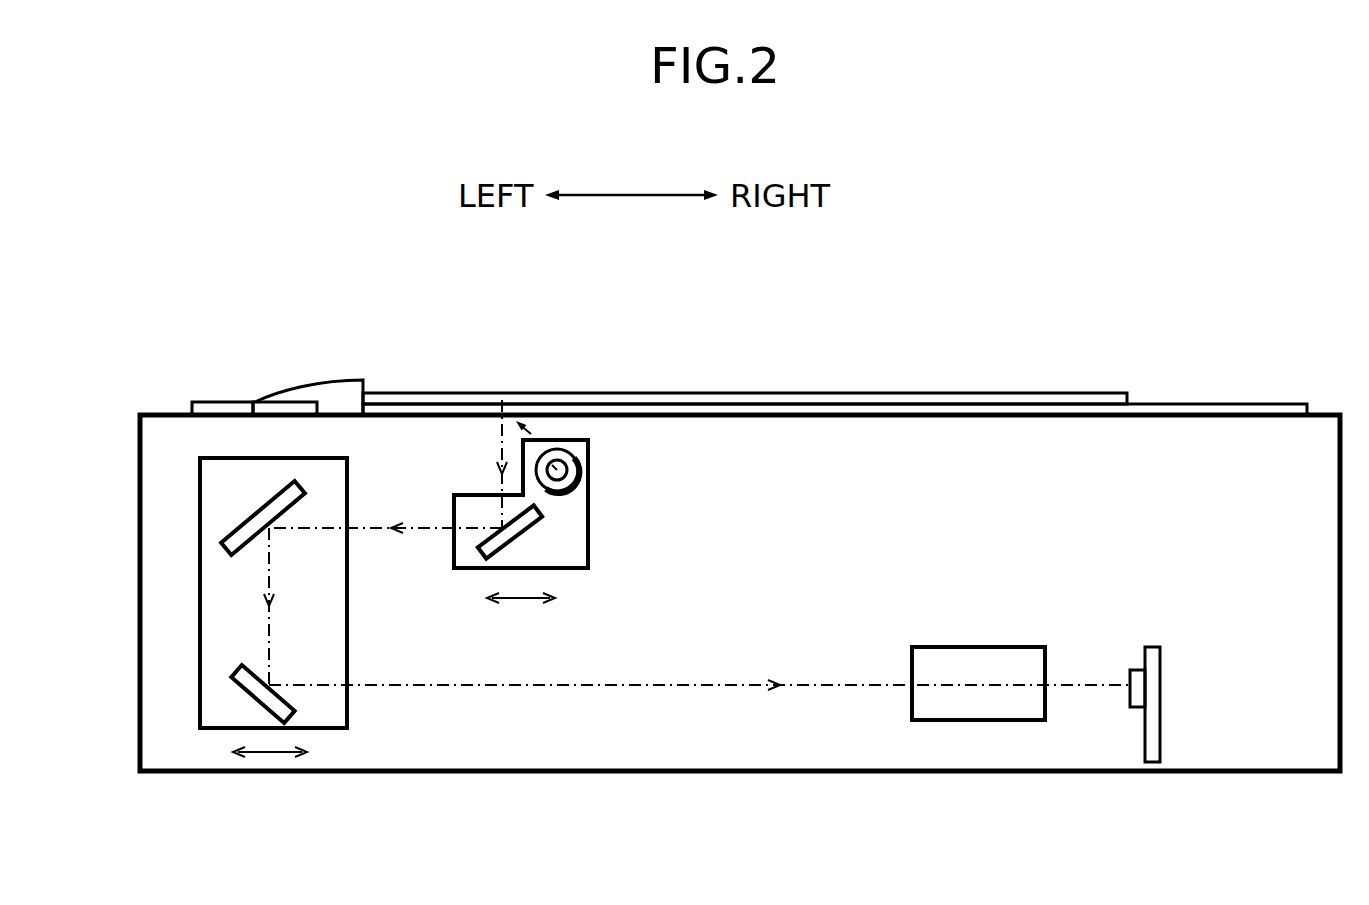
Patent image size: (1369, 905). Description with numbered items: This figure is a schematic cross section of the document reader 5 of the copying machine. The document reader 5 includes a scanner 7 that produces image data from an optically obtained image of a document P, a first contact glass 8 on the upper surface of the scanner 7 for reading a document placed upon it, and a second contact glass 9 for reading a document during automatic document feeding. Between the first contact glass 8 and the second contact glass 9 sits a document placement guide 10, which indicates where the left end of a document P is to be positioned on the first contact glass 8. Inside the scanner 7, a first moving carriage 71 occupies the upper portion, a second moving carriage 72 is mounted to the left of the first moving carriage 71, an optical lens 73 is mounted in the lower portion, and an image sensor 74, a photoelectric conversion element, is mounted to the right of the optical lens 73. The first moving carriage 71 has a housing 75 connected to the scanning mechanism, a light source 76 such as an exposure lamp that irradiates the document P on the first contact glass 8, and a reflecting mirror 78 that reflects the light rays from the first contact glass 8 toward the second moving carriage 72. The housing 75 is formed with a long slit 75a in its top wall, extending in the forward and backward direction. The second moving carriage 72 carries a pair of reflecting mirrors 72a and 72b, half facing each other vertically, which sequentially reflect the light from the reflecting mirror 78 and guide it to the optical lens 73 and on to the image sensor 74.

The document reader 5 is at (1068, 306).
The scanner 7 is at (643, 780).
The first contact glass 8 is at (1227, 403).
The second contact glass 9 is at (222, 400).
The document placement guide 10 is at (298, 394).
The first moving carriage 71 is at (602, 548).
The second moving carriage 72 is at (353, 714).
The reflecting mirror 72a is at (237, 534).
The reflecting mirror 72b is at (247, 693).
The optical lens 73 is at (973, 720).
The image sensor 74 is at (1130, 697).
The housing 75 is at (590, 458).
The slit 75a is at (486, 484).
The light source 76 is at (557, 462).
The reflecting mirror 78 is at (541, 526).
The document P is at (937, 393).